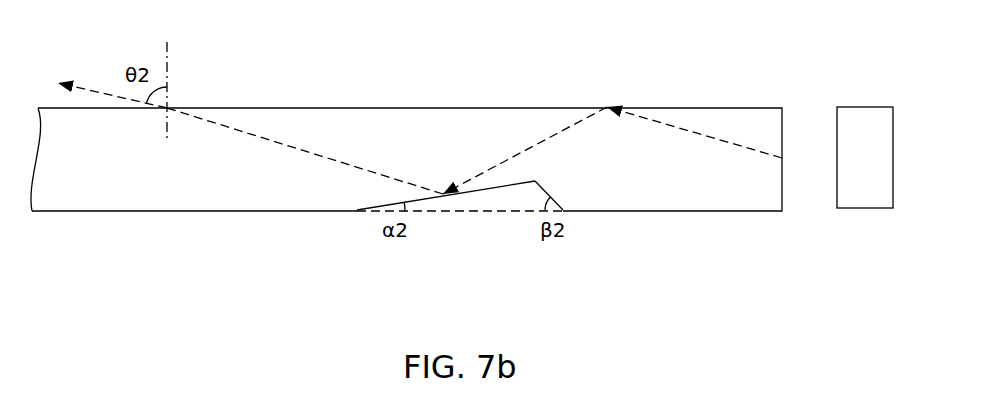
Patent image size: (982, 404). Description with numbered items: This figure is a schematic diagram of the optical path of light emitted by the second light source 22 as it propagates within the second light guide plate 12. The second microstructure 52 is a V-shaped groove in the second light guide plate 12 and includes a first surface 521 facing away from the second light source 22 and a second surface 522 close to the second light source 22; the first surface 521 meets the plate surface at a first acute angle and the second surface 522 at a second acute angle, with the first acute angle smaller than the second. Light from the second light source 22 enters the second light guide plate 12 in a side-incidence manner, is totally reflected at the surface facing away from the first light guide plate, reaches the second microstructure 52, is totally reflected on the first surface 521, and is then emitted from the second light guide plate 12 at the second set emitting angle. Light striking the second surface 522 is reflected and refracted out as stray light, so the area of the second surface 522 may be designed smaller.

The second light guide plate 12 is at (705, 188).
The second light source 22 is at (866, 184).
The second microstructure 52 is at (446, 246).
The first surface 521 is at (480, 190).
The second surface 522 is at (538, 187).